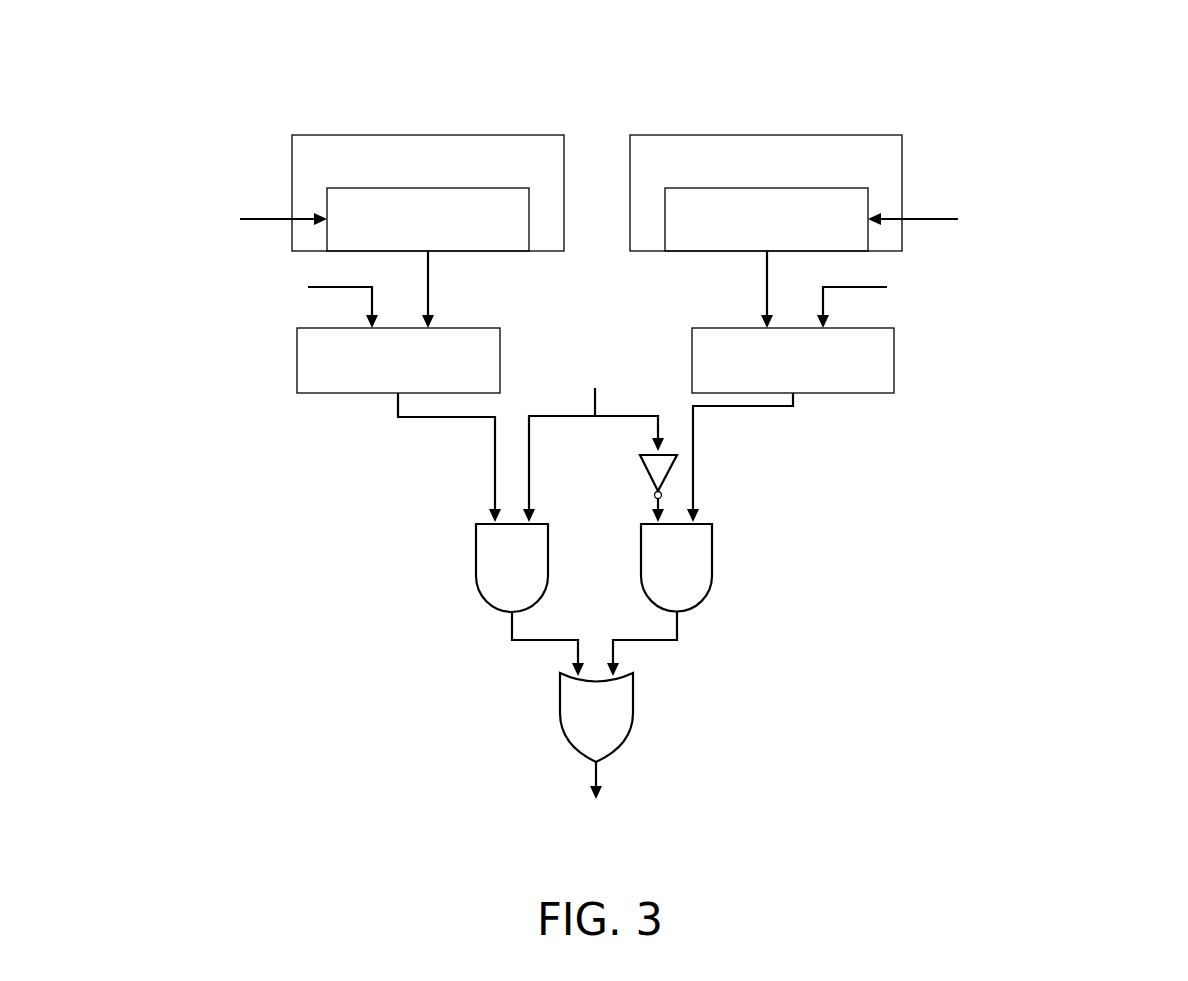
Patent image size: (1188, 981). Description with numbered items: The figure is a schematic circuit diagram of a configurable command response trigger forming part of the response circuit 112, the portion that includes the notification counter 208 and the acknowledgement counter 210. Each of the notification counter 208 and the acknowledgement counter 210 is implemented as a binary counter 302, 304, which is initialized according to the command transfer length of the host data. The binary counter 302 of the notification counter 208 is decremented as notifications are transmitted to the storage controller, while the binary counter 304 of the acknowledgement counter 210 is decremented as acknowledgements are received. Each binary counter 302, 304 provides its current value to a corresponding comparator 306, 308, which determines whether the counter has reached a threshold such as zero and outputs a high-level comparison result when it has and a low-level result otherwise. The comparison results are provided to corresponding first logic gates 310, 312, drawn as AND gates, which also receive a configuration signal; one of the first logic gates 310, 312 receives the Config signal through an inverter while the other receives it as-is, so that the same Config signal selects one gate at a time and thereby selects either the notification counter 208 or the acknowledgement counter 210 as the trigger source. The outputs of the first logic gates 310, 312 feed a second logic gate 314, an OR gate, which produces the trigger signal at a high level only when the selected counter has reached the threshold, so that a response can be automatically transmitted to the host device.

The response circuit 112 is at (809, 44).
The notification counter 208 is at (300, 145).
The acknowledgement counter 210 is at (893, 143).
The binary counter 302 is at (483, 251).
The binary counter 304 is at (706, 251).
The comparator 306 is at (328, 393).
The comparator 308 is at (870, 393).
The first logic gate 310 is at (481, 548).
The first logic gate 312 is at (707, 548).
The second logic gate 314 is at (570, 703).